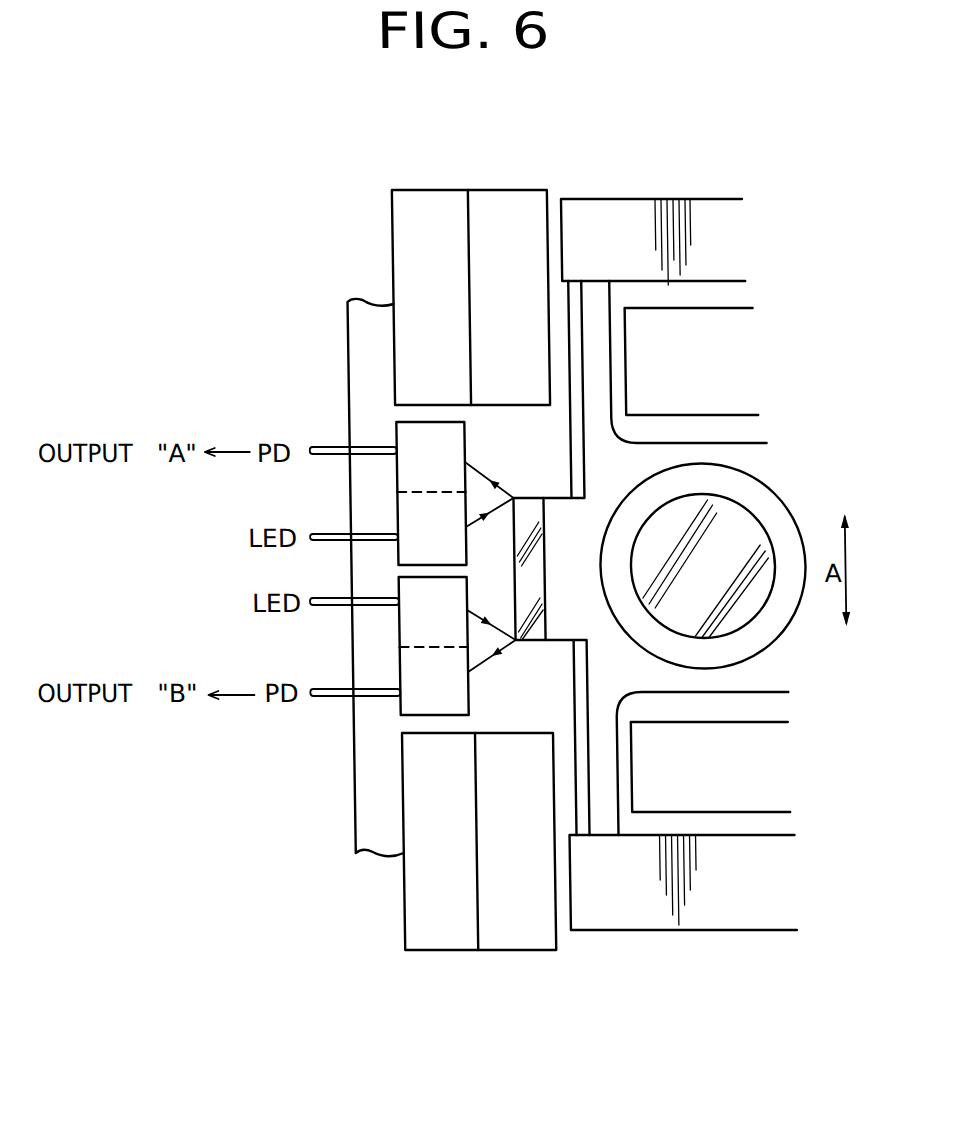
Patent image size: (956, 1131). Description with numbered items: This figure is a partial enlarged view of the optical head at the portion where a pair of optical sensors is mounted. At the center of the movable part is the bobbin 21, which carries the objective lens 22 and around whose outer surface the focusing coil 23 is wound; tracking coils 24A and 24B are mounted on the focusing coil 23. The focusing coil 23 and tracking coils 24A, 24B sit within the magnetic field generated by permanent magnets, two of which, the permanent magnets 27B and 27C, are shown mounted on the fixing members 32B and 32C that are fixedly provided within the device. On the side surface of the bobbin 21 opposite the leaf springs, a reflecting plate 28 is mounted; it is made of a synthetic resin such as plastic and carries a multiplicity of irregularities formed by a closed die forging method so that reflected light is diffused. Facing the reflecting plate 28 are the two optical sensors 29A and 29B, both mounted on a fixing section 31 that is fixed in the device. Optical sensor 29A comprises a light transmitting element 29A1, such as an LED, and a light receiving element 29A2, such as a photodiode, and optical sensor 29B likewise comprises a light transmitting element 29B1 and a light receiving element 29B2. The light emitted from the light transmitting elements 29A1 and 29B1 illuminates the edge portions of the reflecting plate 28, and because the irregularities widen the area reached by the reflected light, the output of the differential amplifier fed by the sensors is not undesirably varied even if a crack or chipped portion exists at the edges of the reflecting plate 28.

The bobbin 21 is at (595, 825).
The objective lens 22 is at (737, 525).
The focusing coil 23 is at (580, 300).
The tracking coil 24A is at (704, 215).
The tracking coil 24B is at (756, 900).
The permanent magnet 27B is at (505, 200).
The permanent magnet 27C is at (508, 925).
The reflecting plate 28 is at (522, 505).
The optical sensor 29A is at (333, 456).
The light transmitting element 29A1 is at (400, 512).
The light receiving element 29A2 is at (405, 440).
The optical sensor 29B is at (335, 693).
The light transmitting element 29B1 is at (400, 630).
The light receiving element 29B2 is at (400, 702).
The fixing section 31 is at (365, 838).
The fixing member 32B is at (429, 198).
The fixing member 32C is at (428, 930).